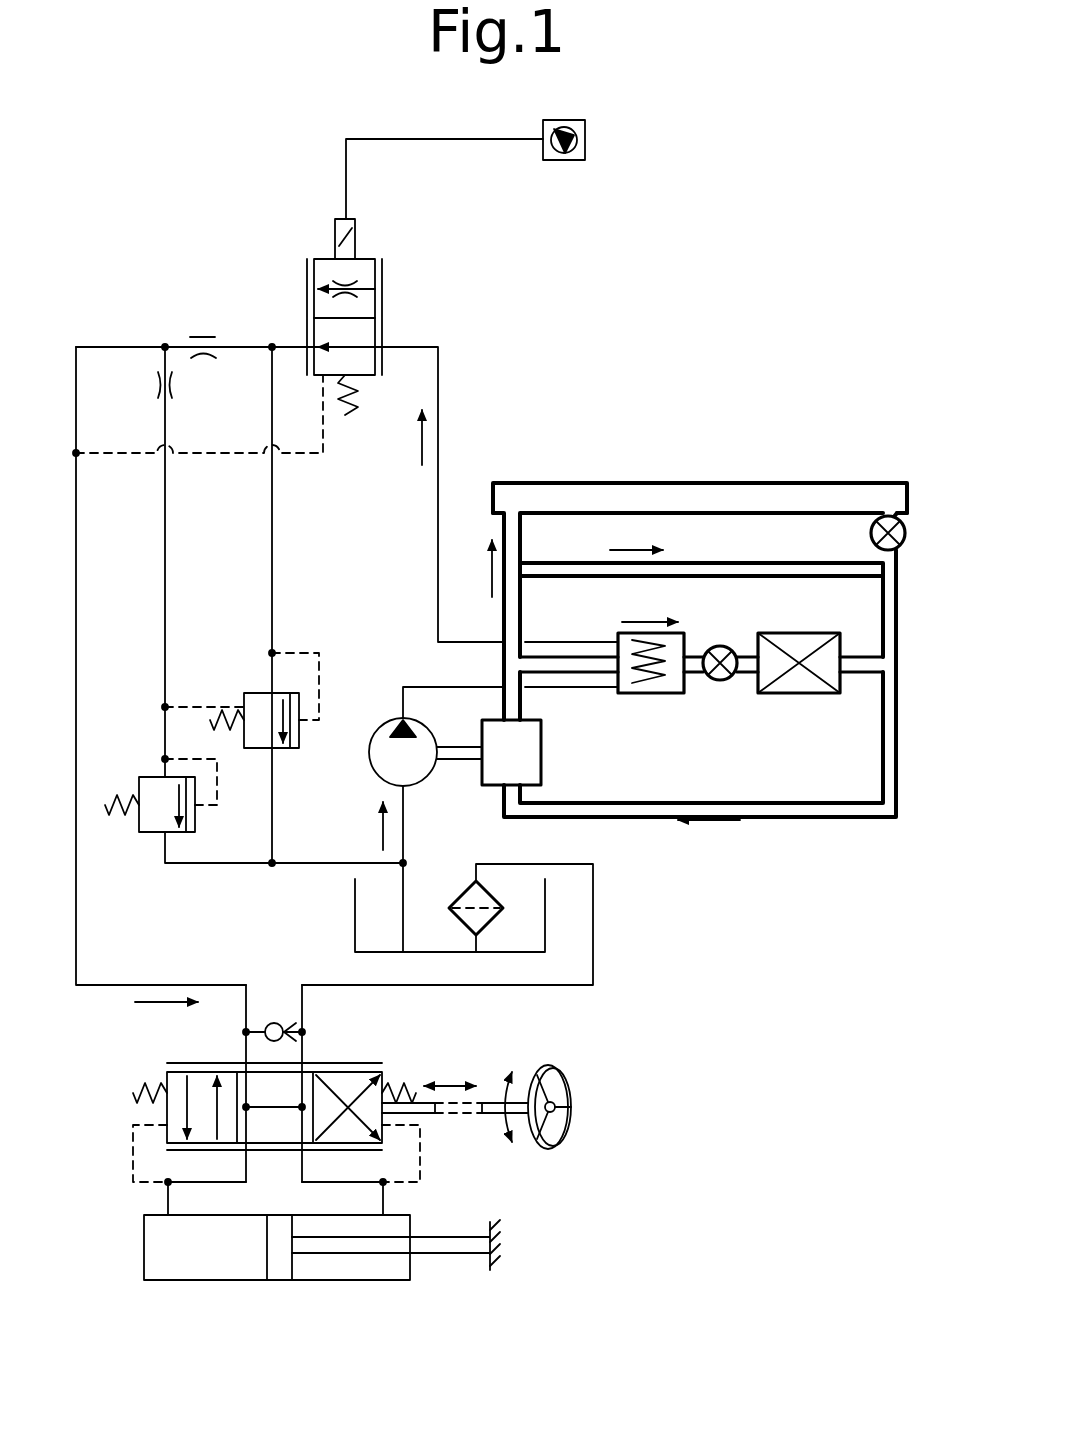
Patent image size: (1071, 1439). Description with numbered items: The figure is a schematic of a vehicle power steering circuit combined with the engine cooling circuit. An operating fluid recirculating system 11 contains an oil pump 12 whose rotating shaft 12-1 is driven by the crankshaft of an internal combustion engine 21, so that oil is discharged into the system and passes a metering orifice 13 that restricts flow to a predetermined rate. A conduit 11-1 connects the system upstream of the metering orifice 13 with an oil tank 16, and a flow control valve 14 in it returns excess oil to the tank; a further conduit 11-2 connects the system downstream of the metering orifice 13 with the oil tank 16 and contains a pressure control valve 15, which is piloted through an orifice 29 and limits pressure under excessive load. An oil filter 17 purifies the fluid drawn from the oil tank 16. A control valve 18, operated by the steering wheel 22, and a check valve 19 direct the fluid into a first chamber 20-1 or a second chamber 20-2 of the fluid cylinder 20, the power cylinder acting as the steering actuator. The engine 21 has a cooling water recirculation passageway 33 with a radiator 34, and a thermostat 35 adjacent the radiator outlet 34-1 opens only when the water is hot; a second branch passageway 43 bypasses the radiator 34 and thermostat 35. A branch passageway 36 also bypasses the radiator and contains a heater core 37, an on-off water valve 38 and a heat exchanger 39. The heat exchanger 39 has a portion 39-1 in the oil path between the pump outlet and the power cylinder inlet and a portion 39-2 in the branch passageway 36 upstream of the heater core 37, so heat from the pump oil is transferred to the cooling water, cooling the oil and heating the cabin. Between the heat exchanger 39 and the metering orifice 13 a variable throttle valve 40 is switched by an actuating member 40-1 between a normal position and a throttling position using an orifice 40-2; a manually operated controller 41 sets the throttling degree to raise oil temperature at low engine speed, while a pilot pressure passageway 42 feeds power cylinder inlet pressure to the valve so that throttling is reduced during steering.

The operating fluid recirculating system 11 is at (440, 382).
The conduit 11-1 is at (273, 602).
The further conduit 11-2 is at (166, 602).
The oil pump 12 is at (373, 728).
The rotating shaft 12-1 is at (458, 728).
The metering orifice 13 is at (203, 337).
The flow control valve 14 is at (258, 693).
The pressure control valve 15 is at (150, 777).
The oil tank 16 is at (354, 920).
The oil filter 17 is at (462, 894).
The control valve 18 is at (190, 1063).
The check valve 19 is at (275, 1022).
The fluid cylinder 20 is at (128, 1288).
The first chamber 20-1 is at (207, 1264).
The second chamber 20-2 is at (345, 1264).
The internal combustion engine 21 is at (541, 748).
The steering wheel 22 is at (553, 1068).
The orifice 29 is at (157, 385).
The cooling water recirculation passageway 33 is at (503, 615).
The radiator 34 is at (622, 483).
The outlet 34-1 is at (900, 512).
The thermostat 35 is at (871, 536).
The branch passageway 36 is at (550, 657).
The heater core 37 is at (802, 633).
The water valve 38 is at (720, 646).
The heat exchanger 39 is at (618, 633).
The portion 39-1 is at (668, 688).
The portion 39-2 is at (690, 675).
The variable throttle valve 40 is at (382, 305).
The actuating member 40-1 is at (353, 232).
The orifice 40-2 is at (360, 272).
The manually operated controller 41 is at (586, 146).
The pilot pressure passageway 42 is at (226, 455).
The second branch passageway 43 is at (692, 572).